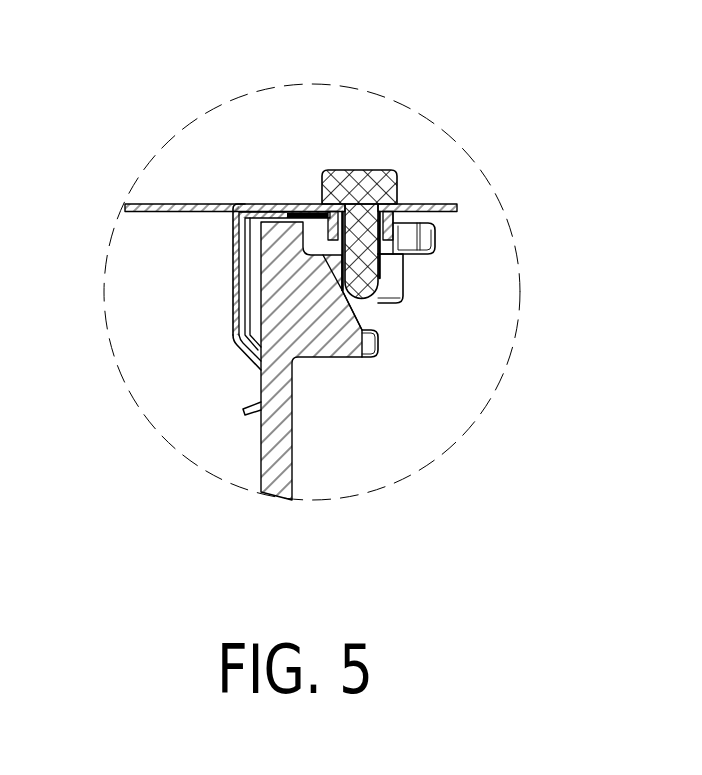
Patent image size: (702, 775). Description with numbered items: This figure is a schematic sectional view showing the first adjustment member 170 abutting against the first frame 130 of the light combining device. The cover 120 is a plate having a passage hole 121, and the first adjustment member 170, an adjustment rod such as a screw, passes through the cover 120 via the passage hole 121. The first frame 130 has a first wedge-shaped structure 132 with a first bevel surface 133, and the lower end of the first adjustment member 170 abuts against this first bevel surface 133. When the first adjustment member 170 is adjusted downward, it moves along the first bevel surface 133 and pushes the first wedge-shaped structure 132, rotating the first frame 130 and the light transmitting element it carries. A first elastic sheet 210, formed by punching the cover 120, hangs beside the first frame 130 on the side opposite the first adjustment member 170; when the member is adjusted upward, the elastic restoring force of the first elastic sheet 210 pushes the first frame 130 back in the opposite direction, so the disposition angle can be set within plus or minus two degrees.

The cover 120 is at (170, 204).
The passage hole 121 is at (407, 204).
The first frame 130 is at (275, 477).
The first wedge-shaped structure 132 is at (330, 337).
The first bevel surface 133 is at (368, 321).
The first adjustment member 170 is at (365, 178).
The first elastic sheet 210 is at (233, 277).